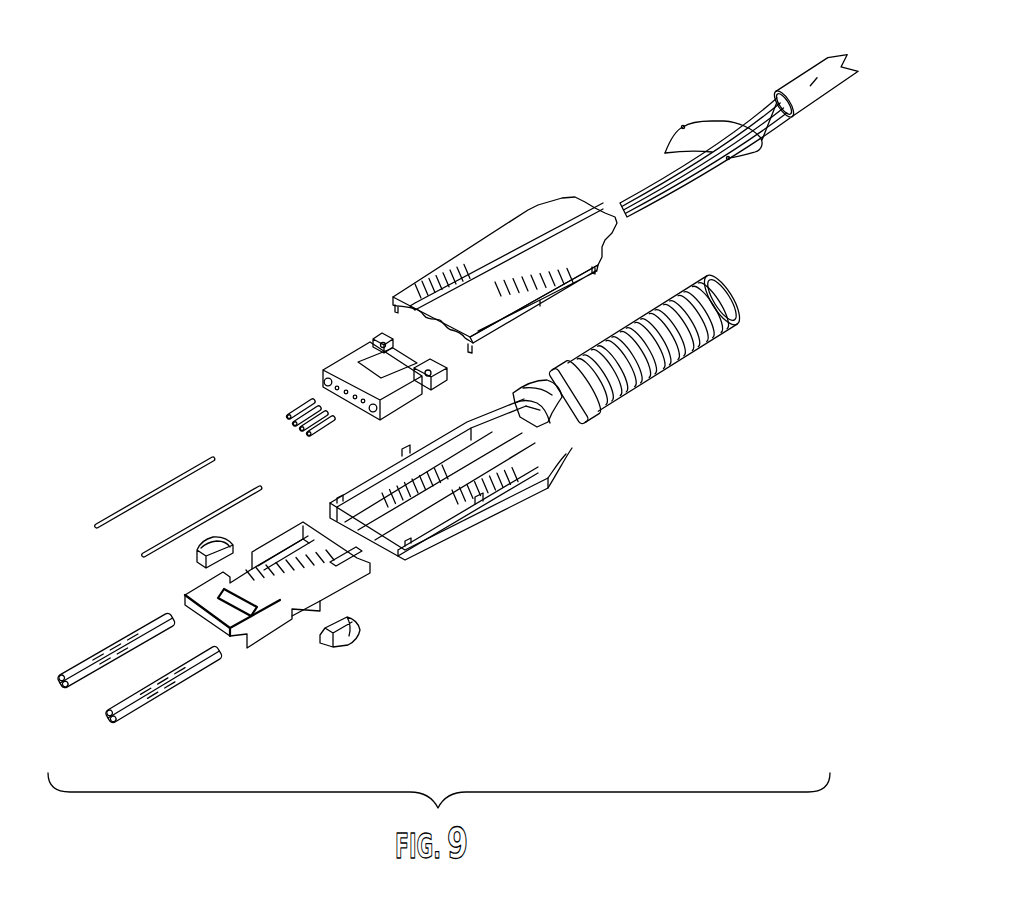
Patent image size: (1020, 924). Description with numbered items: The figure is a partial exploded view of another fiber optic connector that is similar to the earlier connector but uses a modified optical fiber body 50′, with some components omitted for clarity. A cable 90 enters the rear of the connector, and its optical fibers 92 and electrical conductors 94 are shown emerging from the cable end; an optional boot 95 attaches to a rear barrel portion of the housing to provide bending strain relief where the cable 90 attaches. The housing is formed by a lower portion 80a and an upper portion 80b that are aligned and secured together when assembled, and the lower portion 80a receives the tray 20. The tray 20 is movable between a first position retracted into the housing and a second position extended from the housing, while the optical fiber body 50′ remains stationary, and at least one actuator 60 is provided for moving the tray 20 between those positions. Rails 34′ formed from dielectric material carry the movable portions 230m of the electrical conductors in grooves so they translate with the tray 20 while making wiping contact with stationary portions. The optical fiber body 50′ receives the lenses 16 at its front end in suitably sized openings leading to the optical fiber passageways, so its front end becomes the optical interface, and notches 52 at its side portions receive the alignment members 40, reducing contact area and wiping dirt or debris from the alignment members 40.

The cable 90 is at (800, 83).
The optical fibers 92 is at (636, 197).
The electrical conductors 94 is at (665, 153).
The upper portion 80b is at (517, 233).
The boot 95 is at (681, 366).
The lower portion 80a is at (507, 492).
The optical fiber body 50′ is at (322, 377).
The notches 52 is at (432, 381).
The lenses 16 is at (305, 437).
The alignment members 40 is at (136, 508).
The actuators 60 is at (198, 563).
The tray 20 is at (357, 577).
The rails 34′ is at (160, 698).
The movable portions 230m is at (107, 723).